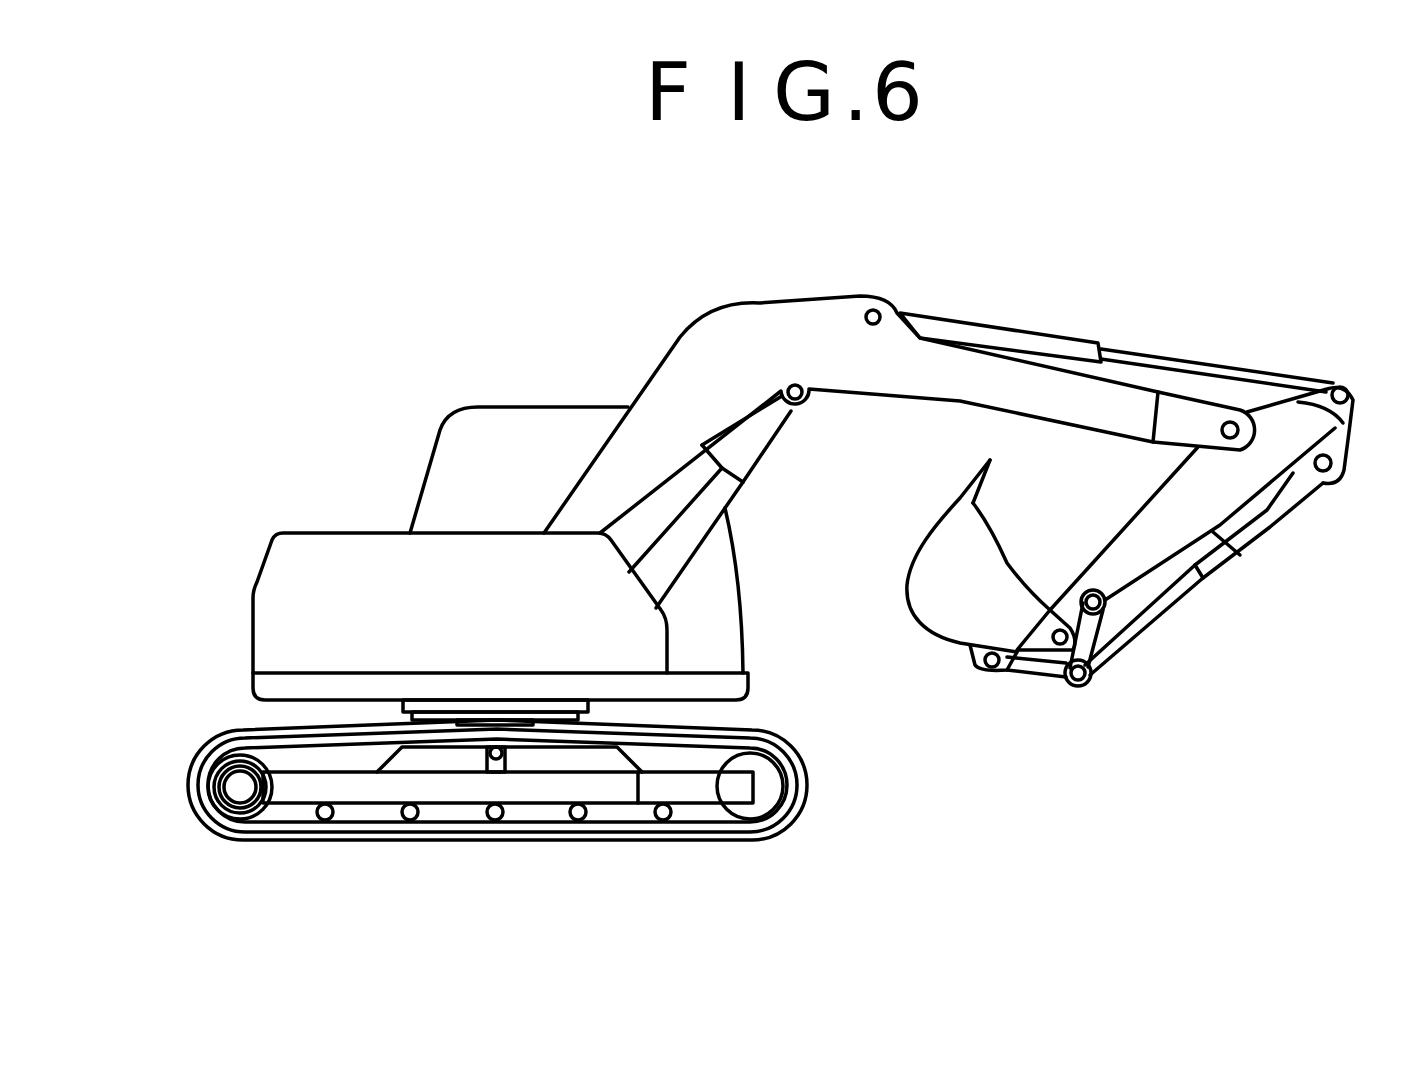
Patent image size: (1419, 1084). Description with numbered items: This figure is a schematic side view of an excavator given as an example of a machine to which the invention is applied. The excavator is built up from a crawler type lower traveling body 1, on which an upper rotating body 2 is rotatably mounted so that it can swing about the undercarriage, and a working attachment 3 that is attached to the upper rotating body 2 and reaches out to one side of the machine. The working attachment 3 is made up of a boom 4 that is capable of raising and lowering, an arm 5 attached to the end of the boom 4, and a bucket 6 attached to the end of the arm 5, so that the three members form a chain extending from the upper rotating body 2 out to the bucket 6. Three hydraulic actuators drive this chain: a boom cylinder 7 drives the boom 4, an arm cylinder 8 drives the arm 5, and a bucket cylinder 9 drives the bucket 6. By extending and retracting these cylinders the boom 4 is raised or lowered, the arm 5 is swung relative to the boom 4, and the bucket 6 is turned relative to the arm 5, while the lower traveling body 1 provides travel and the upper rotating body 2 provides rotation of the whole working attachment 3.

The lower traveling body 1 is at (627, 843).
The upper rotating body 2 is at (463, 367).
The working attachment 3 is at (1250, 373).
The boom 4 is at (717, 307).
The arm 5 is at (1237, 547).
The bucket 6 is at (915, 618).
The boom cylinder 7 is at (737, 495).
The arm cylinder 8 is at (1040, 333).
The bucket cylinder 9 is at (1170, 610).